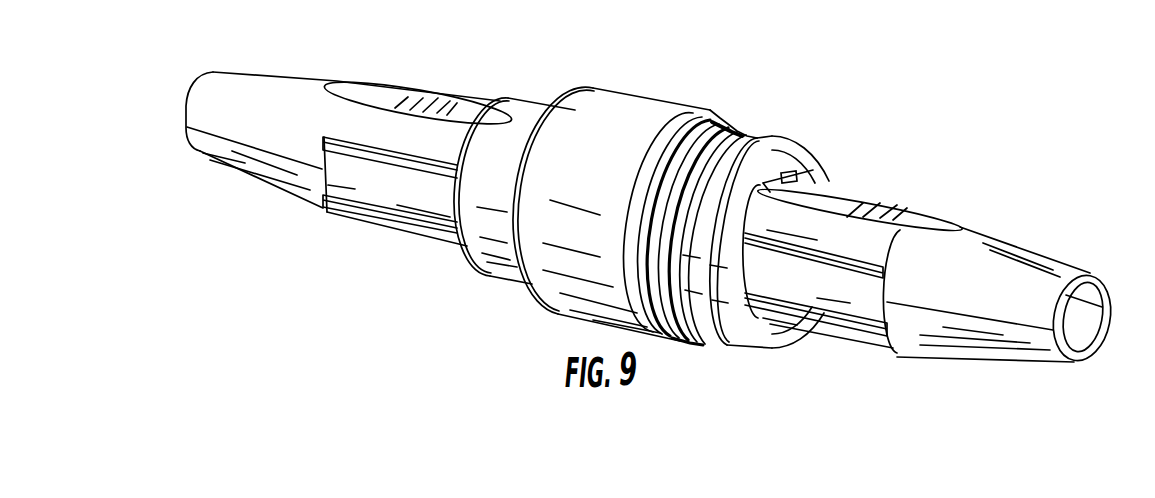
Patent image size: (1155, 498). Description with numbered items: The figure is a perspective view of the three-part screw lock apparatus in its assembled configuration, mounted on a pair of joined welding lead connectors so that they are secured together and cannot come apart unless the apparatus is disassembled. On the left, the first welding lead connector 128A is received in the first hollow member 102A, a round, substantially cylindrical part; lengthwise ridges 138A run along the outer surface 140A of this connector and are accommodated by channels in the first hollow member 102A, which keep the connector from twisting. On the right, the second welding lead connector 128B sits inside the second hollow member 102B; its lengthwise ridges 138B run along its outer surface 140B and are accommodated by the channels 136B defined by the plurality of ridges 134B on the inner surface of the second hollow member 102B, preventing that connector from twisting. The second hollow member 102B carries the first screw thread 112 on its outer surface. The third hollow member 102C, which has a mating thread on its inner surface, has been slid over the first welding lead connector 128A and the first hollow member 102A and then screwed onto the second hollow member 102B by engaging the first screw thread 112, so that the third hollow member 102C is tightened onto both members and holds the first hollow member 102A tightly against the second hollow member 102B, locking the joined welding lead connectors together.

The first welding lead connector 128A is at (394, 92).
The second welding lead connector 128B is at (925, 212).
The first hollow member 102A is at (512, 124).
The second hollow member 102B is at (731, 322).
The third hollow member 102C is at (637, 100).
The first screw thread 112 is at (720, 137).
The ridges 134B is at (750, 205).
The channels 136B is at (743, 225).
The lengthwise ridges 138A is at (393, 213).
The lengthwise ridges 138B is at (837, 317).
The outer surface 140A is at (425, 198).
The outer surface 140B is at (820, 290).